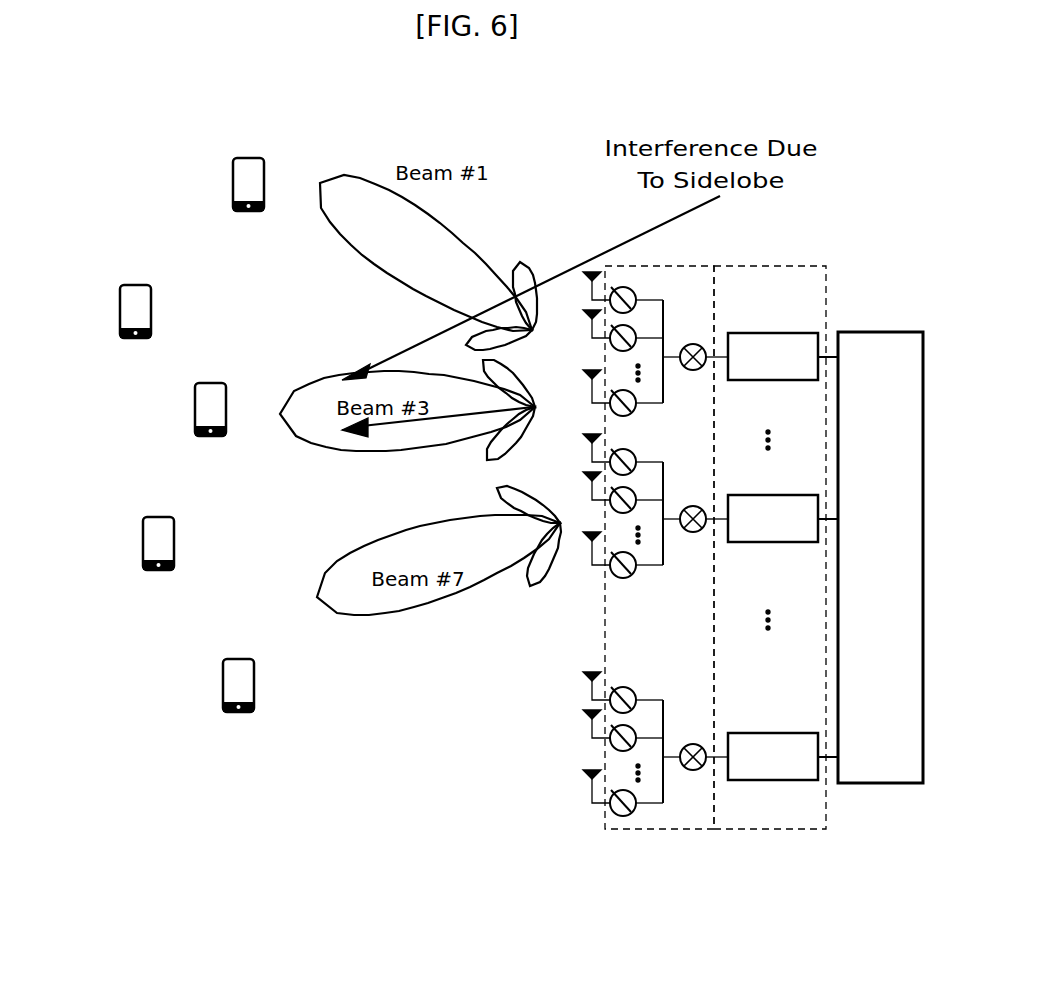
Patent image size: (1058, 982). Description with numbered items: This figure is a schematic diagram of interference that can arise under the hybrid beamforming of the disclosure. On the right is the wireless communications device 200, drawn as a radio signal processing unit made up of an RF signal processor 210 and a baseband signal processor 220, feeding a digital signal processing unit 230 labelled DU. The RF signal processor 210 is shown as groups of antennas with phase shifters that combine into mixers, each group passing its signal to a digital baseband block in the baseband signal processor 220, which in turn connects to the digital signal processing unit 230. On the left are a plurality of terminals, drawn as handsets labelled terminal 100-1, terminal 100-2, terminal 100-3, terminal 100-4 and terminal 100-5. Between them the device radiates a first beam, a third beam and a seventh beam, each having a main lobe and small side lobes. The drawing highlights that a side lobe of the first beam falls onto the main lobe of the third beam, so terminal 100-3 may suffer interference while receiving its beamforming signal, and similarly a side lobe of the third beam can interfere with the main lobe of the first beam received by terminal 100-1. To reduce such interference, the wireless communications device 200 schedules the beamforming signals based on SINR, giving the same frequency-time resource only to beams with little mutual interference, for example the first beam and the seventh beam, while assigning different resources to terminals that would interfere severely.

The terminal 100-1 is at (231, 183).
The terminal 100-2 is at (118, 313).
The terminal 100-3 is at (193, 408).
The terminal 100-4 is at (141, 543).
The terminal 100-5 is at (221, 682).
The wireless communications device 200 is at (759, 607).
The RF signal processor 210 is at (655, 831).
The baseband signal processor 220 is at (752, 831).
The digital signal processing unit (DU) 230 is at (876, 330).